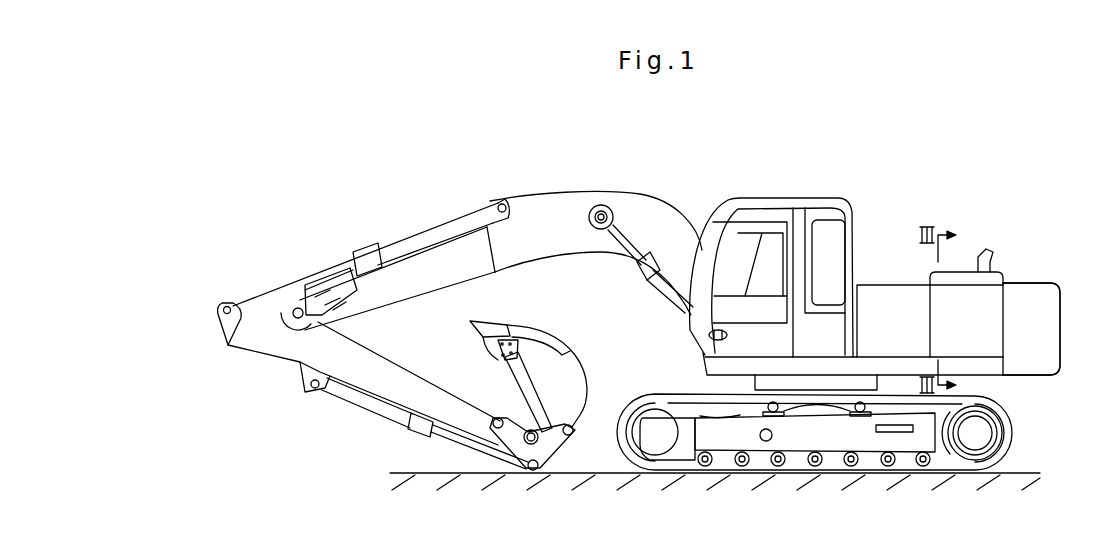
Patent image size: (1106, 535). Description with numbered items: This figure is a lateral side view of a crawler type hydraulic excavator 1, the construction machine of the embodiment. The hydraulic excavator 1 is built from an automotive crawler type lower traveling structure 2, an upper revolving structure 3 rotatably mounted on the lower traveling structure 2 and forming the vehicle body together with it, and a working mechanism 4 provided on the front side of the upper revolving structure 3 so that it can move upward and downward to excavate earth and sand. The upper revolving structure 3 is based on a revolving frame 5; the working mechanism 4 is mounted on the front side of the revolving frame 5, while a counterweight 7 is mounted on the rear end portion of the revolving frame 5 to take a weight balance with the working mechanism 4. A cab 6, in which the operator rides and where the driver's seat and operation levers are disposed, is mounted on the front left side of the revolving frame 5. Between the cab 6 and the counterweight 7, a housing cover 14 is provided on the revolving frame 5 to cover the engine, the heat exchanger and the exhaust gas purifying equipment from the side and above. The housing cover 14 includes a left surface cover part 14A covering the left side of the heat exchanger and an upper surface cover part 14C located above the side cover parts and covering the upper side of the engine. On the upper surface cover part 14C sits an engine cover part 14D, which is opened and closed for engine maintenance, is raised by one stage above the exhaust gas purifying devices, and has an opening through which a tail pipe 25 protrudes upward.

The hydraulic excavator 1 is at (727, 183).
The lower traveling structure 2 is at (795, 437).
The upper revolving structure 3 is at (845, 195).
The working mechanism 4 is at (570, 210).
The revolving frame 5 is at (747, 367).
The cab 6 is at (787, 208).
The counterweight 7 is at (1045, 327).
The housing cover 14 is at (880, 278).
The left surface cover part 14A is at (980, 338).
The upper surface cover part 14C is at (984, 283).
The engine cover part 14D is at (971, 276).
The tail pipe 25 is at (988, 253).